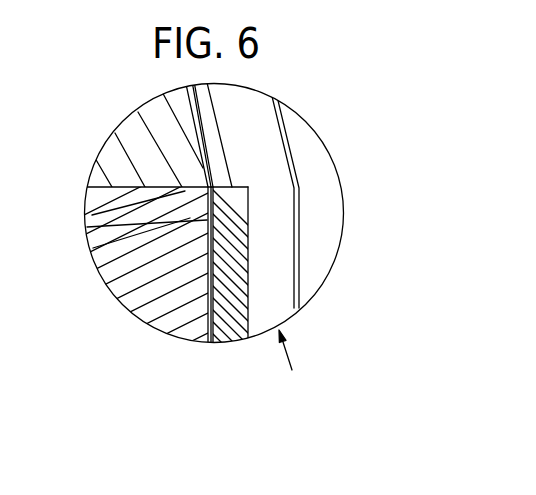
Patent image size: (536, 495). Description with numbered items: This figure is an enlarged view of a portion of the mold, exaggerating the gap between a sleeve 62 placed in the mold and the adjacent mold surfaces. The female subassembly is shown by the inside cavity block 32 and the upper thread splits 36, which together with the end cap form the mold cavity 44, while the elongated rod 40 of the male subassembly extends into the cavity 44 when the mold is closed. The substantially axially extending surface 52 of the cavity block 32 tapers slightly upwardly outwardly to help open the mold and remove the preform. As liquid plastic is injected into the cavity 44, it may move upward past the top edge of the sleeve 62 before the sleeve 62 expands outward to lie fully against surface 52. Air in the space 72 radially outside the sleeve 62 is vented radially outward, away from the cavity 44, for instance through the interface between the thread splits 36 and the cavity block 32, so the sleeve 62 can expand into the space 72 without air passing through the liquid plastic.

The inside cavity block 32 is at (127, 290).
The upper thread splits 36 is at (135, 130).
The elongated rod 40 is at (308, 157).
The mold cavity 44 is at (290, 364).
The axially extending surface of cavity block 52 is at (93, 248).
The sleeve 62 is at (210, 343).
The space 72 is at (92, 215).